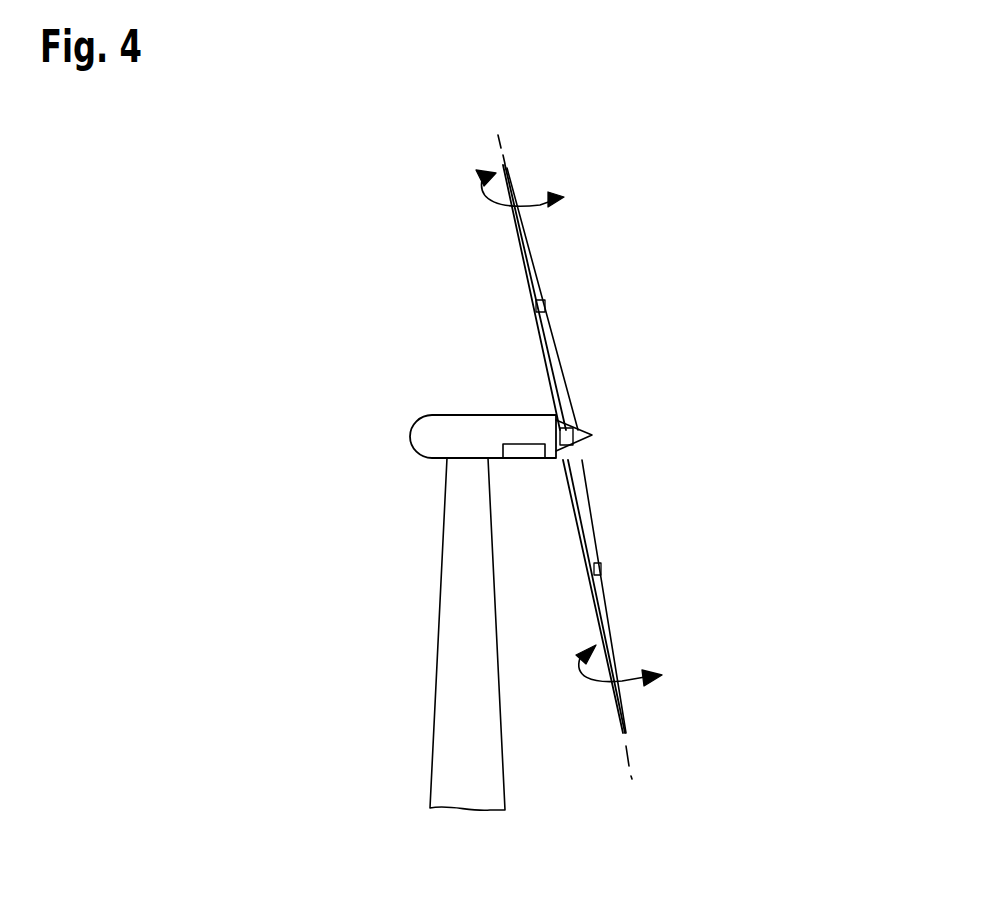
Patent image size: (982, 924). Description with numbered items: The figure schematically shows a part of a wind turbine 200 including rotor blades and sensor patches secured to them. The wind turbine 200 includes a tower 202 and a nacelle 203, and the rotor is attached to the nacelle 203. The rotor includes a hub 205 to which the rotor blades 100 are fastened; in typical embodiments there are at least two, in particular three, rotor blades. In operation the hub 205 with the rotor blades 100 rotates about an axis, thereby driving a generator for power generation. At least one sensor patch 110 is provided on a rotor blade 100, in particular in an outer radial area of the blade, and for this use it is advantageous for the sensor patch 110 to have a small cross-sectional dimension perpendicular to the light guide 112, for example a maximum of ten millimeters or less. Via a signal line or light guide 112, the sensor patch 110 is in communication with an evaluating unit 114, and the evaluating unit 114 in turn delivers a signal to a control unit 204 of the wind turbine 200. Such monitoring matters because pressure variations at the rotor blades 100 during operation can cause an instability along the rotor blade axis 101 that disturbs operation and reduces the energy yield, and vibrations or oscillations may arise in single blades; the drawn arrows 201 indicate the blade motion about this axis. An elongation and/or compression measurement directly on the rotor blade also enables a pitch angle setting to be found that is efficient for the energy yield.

The wind turbine 200 is at (206, 266).
The pitch rotation of rotor blade 201 is at (480, 197).
The tower 202 is at (452, 662).
The nacelle 203 is at (428, 436).
The control unit 204 is at (525, 458).
The hub 205 is at (592, 435).
The rotor blade 100 is at (528, 245).
The rotor blade axis 101 is at (632, 748).
The sensor patch 110 is at (545, 305).
The light guide 112 is at (568, 368).
The evaluating unit 114 is at (590, 446).